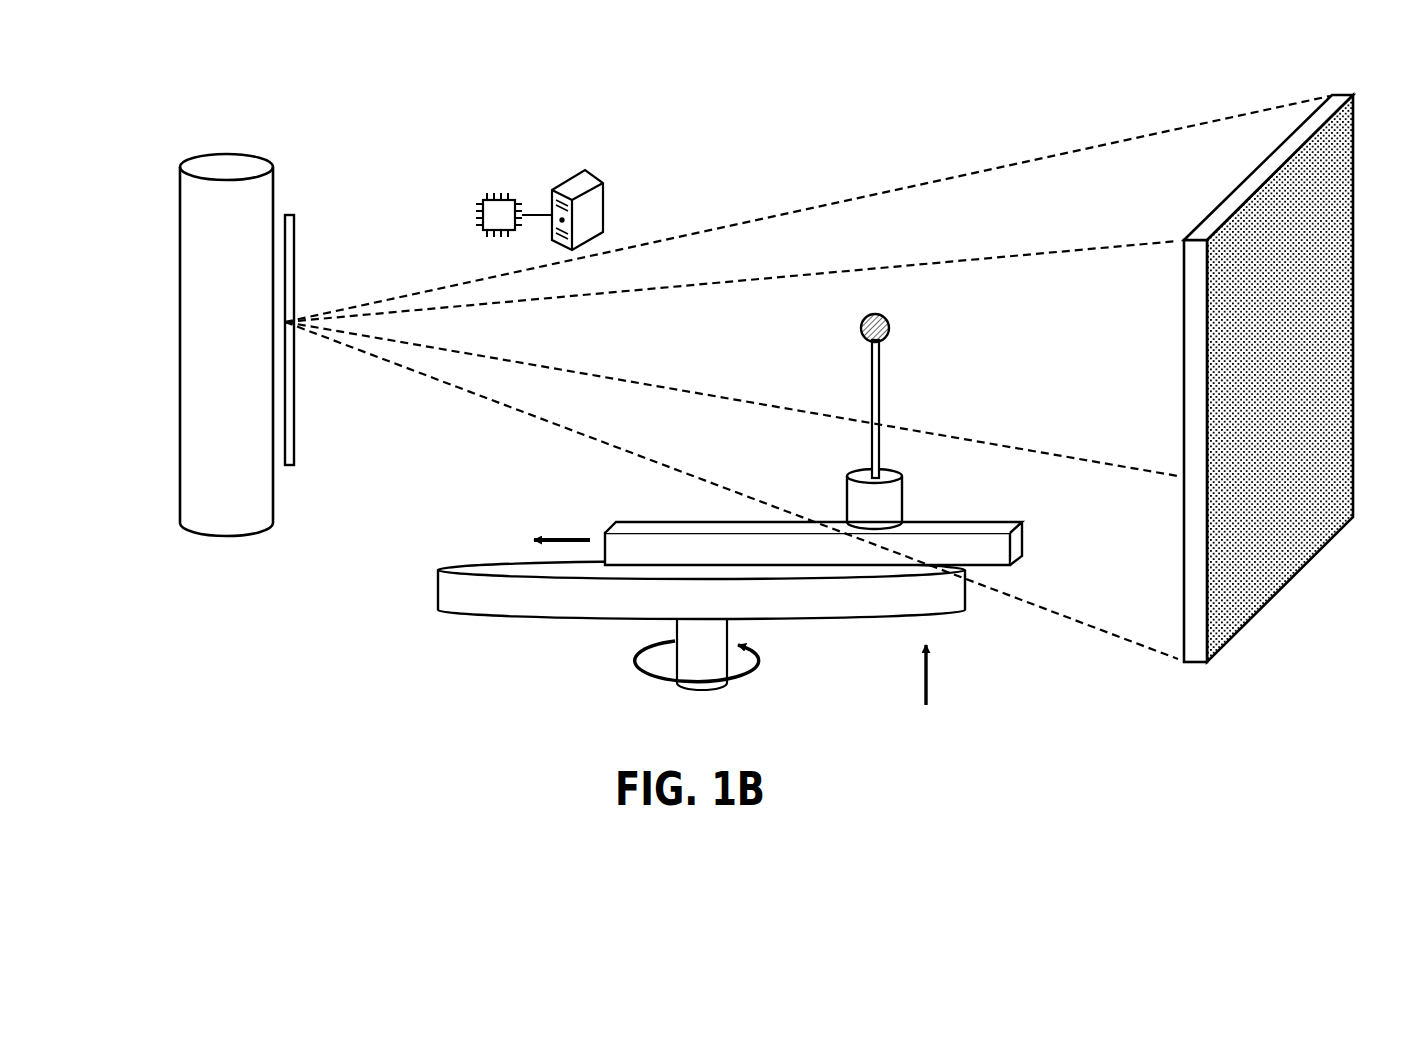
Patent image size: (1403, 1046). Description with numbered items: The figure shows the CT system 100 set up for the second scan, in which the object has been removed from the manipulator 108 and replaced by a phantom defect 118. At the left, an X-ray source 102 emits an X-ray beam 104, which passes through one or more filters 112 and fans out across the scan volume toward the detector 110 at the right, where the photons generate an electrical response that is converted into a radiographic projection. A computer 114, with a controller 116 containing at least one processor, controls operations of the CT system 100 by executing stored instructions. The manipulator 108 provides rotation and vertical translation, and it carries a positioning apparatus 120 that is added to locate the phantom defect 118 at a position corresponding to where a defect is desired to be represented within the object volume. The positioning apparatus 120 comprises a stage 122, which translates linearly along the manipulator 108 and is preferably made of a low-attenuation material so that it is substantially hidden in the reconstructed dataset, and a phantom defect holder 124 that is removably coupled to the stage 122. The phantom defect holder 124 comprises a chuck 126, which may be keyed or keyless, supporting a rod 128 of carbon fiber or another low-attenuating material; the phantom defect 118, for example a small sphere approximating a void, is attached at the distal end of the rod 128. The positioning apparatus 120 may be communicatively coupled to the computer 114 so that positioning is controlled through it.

The CT system 100 is at (174, 594).
The X-ray source 102 is at (186, 246).
The X-ray beam 104 is at (880, 186).
The manipulator 108 is at (484, 654).
The detector 110 is at (1332, 180).
The filter 112 is at (296, 248).
The computer 114 is at (596, 210).
The controller 116 is at (490, 205).
The phantom defect 118 is at (890, 338).
The positioning apparatus 120 is at (710, 456).
The stage 122 is at (640, 522).
The phantom defect holder 124 is at (948, 434).
The chuck 126 is at (856, 502).
The rod 128 is at (868, 425).